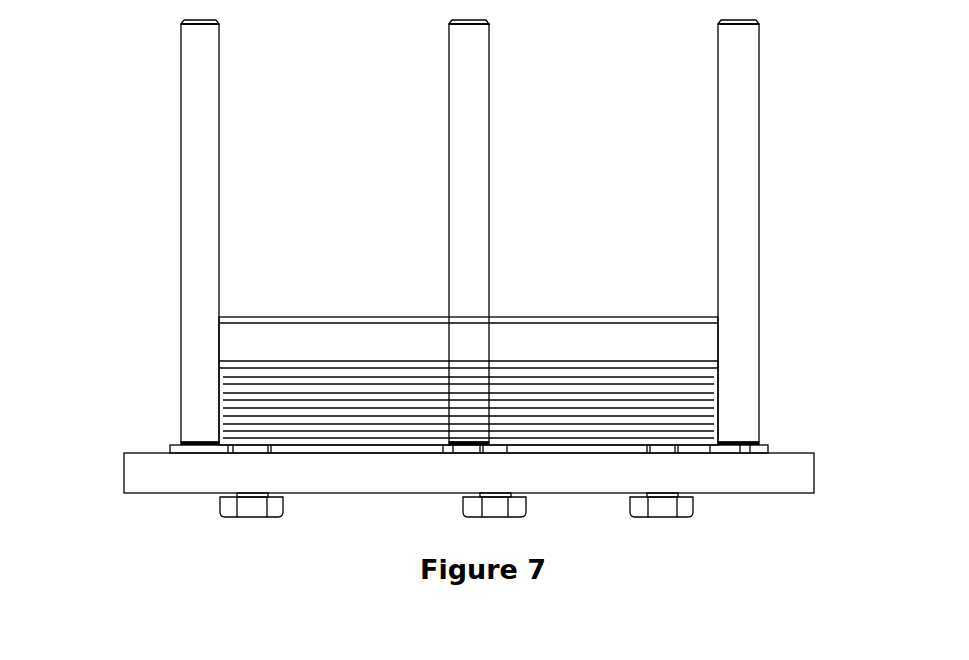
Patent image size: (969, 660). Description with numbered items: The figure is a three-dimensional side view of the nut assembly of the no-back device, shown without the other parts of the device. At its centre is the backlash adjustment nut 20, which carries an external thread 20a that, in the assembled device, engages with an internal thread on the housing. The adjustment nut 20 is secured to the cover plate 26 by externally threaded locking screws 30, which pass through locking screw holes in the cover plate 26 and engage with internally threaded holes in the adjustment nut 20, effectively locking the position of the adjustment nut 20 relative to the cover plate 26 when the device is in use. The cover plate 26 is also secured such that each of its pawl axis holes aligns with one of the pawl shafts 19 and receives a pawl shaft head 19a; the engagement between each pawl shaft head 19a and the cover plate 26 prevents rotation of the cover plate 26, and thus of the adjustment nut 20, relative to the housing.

The pawl shaft 19 is at (197, 105).
The pawl shaft head 19a is at (187, 445).
The backlash adjustment nut 20 is at (264, 353).
The external thread 20a is at (688, 400).
The cover plate 26 is at (160, 469).
The locking screw 30 is at (247, 507).